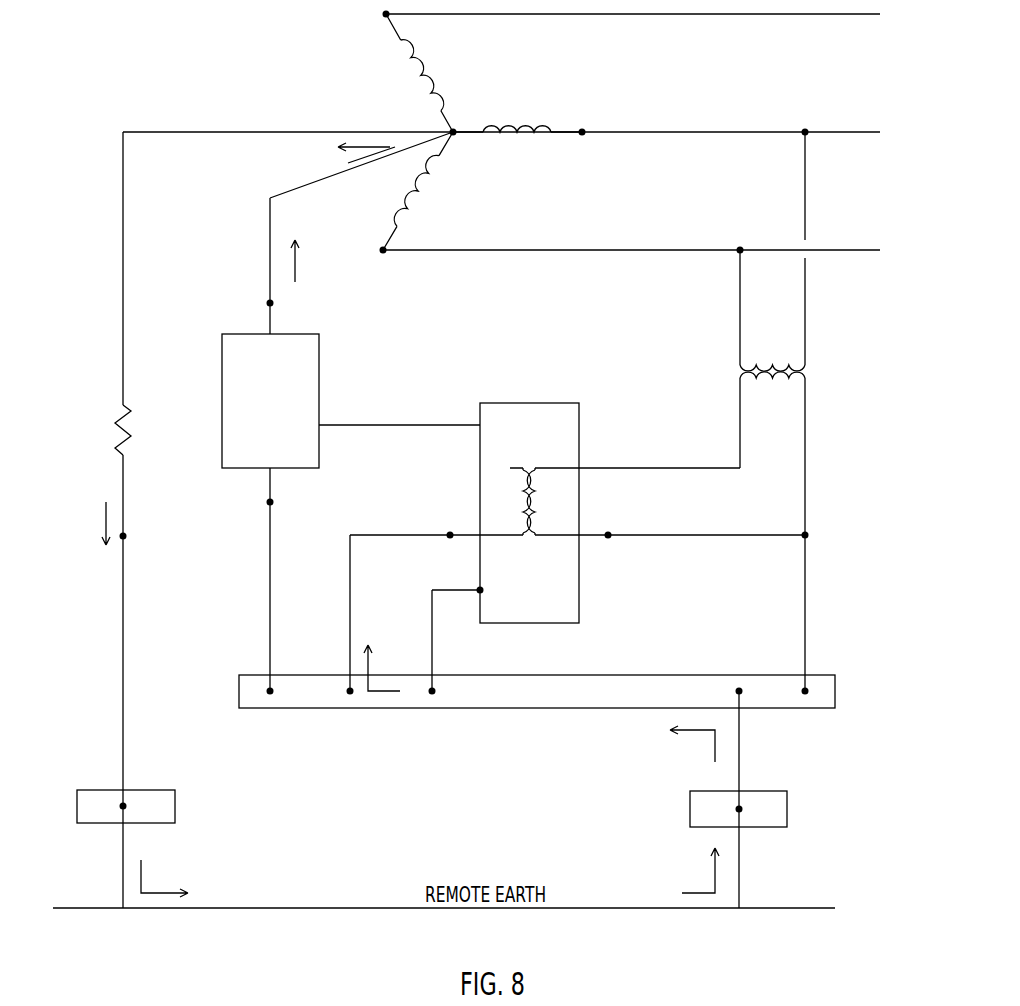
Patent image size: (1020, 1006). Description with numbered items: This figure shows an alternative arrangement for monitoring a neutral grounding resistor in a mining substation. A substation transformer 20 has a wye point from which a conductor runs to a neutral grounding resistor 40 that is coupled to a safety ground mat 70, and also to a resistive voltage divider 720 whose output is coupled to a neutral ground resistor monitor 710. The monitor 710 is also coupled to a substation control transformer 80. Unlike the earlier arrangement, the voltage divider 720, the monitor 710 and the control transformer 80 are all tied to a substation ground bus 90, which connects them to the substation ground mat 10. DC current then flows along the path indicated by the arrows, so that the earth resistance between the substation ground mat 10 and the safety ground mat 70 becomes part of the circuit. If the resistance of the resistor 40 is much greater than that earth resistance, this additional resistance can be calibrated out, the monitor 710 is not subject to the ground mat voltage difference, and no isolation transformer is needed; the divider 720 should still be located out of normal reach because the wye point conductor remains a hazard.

The substation ground mat 10 is at (747, 791).
The substation transformer 20 is at (451, 73).
The neutral grounding resistor 40 is at (116, 417).
The safety ground mat 70 is at (175, 800).
The substation control transformer 80 is at (724, 361).
The substation ground bus 90 is at (683, 675).
The neutral ground resistor monitor 710 is at (579, 418).
The resistive voltage divider 720 is at (319, 378).